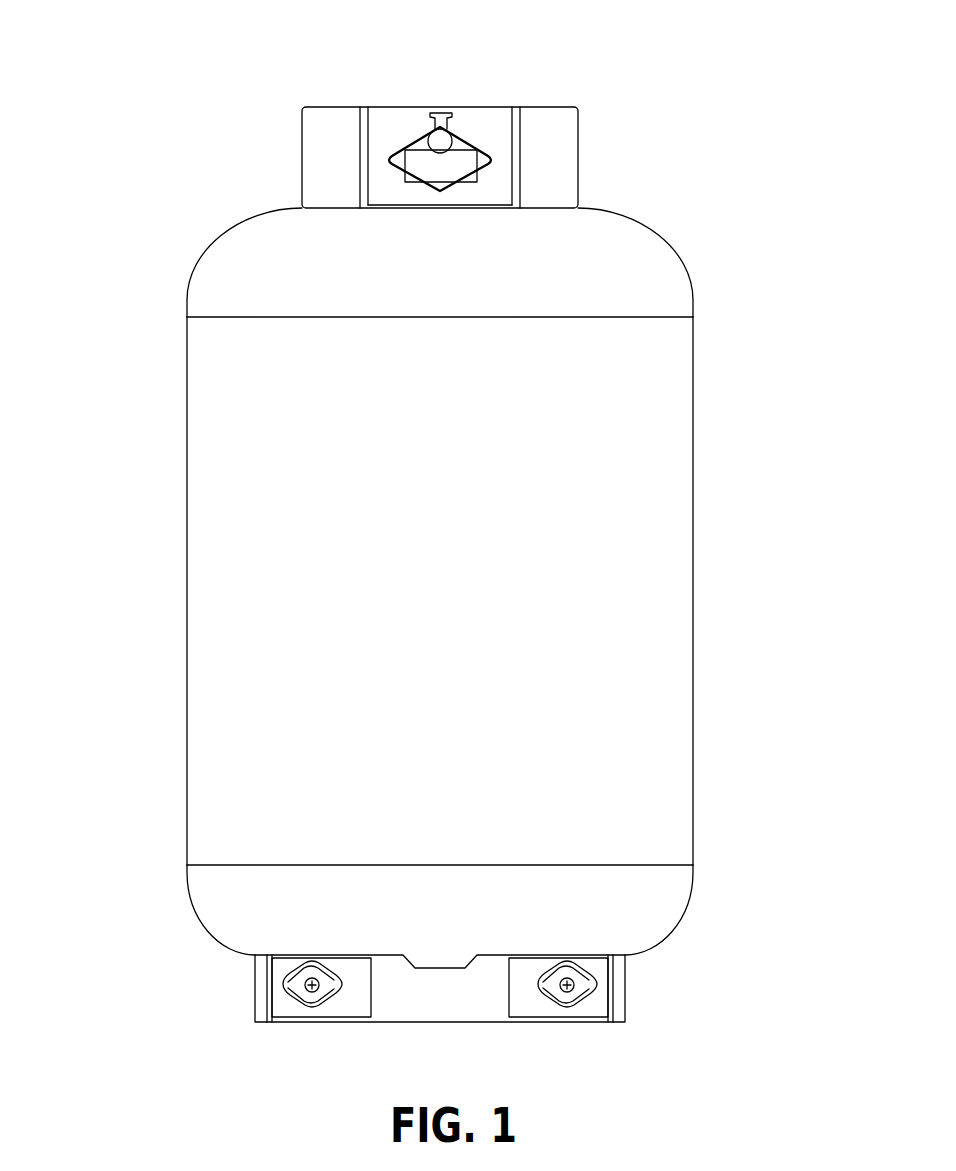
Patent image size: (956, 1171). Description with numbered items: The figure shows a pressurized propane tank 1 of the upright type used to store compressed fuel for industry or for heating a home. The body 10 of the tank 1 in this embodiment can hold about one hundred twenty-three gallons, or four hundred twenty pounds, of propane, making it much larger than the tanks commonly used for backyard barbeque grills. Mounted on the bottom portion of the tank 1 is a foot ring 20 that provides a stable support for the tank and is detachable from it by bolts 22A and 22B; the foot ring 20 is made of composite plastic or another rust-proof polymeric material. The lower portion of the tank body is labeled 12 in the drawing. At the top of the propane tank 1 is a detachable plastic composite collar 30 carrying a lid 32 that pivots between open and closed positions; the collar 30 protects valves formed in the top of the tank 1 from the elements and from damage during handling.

The pressurized propane tank 1 is at (436, 540).
The body 10 is at (694, 527).
The bottom dome of tank 12 is at (673, 885).
The foot ring 20 is at (436, 965).
The bolt 22A is at (305, 984).
The bolt 22B is at (574, 983).
The collar 30 is at (579, 168).
The lid 32 is at (548, 107).